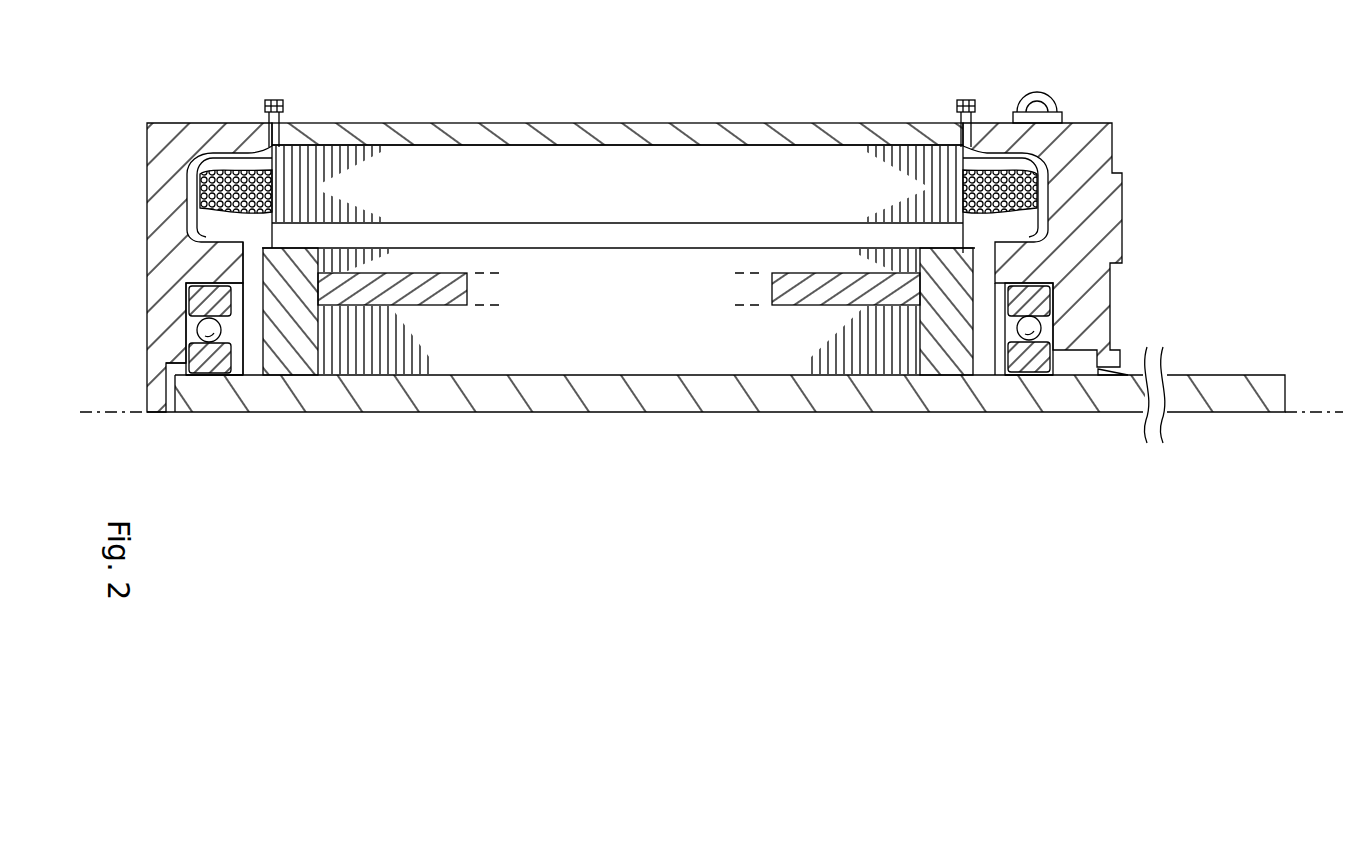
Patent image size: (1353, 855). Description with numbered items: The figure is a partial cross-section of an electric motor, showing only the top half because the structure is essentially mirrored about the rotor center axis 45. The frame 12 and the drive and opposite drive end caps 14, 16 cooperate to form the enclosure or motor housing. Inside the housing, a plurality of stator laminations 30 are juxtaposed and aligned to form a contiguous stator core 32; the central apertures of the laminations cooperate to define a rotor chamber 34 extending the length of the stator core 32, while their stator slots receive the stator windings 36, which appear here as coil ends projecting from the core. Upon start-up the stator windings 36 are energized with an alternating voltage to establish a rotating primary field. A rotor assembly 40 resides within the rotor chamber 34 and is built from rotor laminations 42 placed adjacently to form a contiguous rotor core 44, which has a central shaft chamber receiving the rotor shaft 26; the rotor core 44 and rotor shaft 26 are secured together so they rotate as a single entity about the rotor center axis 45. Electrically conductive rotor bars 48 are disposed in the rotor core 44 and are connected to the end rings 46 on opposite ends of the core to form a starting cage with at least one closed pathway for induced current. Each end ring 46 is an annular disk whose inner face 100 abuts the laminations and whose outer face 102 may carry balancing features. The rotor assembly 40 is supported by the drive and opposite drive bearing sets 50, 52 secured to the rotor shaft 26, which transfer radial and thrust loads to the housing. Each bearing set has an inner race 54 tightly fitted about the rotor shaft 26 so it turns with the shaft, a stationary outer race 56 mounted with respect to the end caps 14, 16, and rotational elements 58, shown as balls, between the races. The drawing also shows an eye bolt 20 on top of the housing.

The frame 12 is at (387, 123).
The drive end cap 14 is at (1118, 127).
The opposite drive end cap 16 is at (163, 122).
The lifting eye bolt 20 is at (1055, 80).
The rotor shaft 26 is at (1290, 400).
The stator laminations 30 is at (330, 146).
The stator core 32 is at (693, 175).
The rotor chamber 34 is at (953, 233).
The stator windings 36 is at (988, 176).
The rotor assembly 40 is at (683, 325).
The rotor laminations 42 is at (357, 377).
The rotor core 44 is at (497, 372).
The rotor center axis 45 is at (80, 417).
The end rings 46 is at (283, 377).
The rotor bars 48 is at (438, 272).
The drive bearing set 50 is at (178, 335).
The opposite drive bearing set 52 is at (1052, 343).
The inner race 54 is at (205, 377).
The outer race 56 is at (184, 283).
The rotational elements 58 is at (197, 328).
The inner face 100 is at (905, 325).
The outer face 102 is at (987, 330).